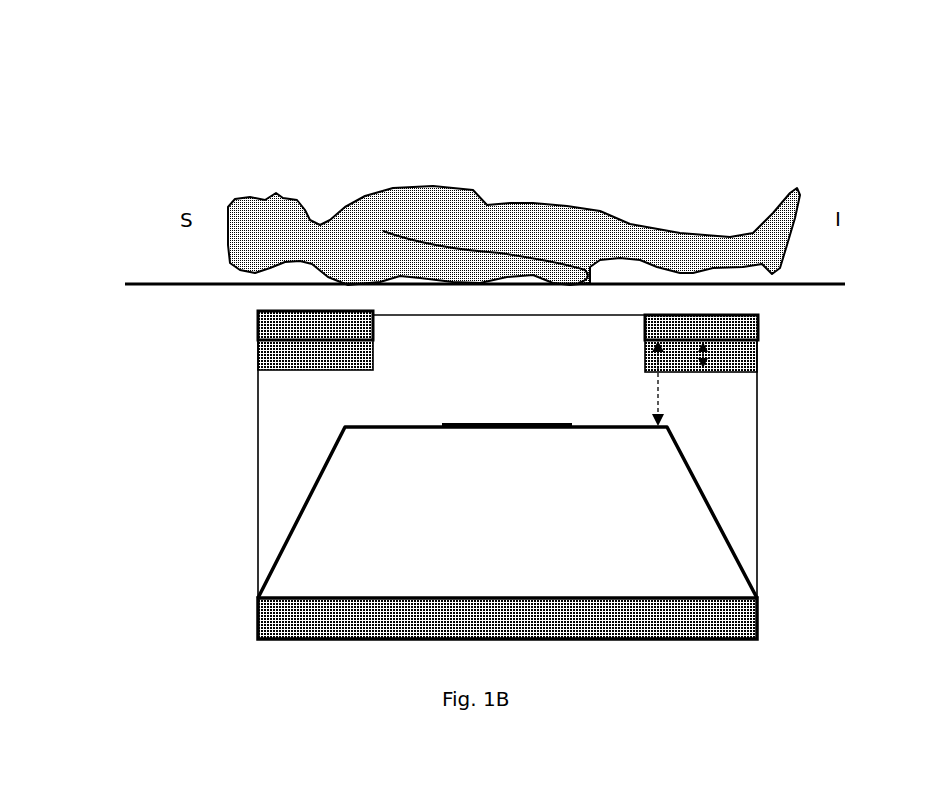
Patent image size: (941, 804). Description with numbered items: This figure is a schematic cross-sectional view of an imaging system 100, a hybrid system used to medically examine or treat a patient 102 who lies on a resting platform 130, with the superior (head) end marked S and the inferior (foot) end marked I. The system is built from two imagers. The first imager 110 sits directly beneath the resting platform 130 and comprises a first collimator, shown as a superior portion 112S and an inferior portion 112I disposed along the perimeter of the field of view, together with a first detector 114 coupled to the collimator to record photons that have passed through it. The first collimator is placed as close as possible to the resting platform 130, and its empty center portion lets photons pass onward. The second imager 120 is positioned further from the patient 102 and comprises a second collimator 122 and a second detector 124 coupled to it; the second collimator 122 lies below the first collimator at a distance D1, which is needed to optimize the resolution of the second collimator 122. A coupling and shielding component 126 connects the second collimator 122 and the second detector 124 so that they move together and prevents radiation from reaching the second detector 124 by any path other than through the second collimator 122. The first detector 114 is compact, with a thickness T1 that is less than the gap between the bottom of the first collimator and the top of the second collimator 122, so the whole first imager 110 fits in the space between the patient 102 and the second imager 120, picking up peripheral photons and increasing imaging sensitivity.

The imaging system 100 is at (160, 115).
The patient 102 is at (533, 203).
The resting platform 130 is at (825, 288).
The imager 110 is at (500, 348).
The first collimator (superior portion) 112S is at (258, 332).
The first collimator (inferior portion) 112I is at (645, 330).
The first detector 114 is at (645, 365).
The imager 120 is at (457, 489).
The second collimator 122 is at (535, 430).
The second detector 124 is at (541, 630).
The coupling and shielding component 126 is at (313, 490).
The thickness of first detector T1 is at (720, 355).
The distance between first collimator and second collimator D1 is at (670, 383).